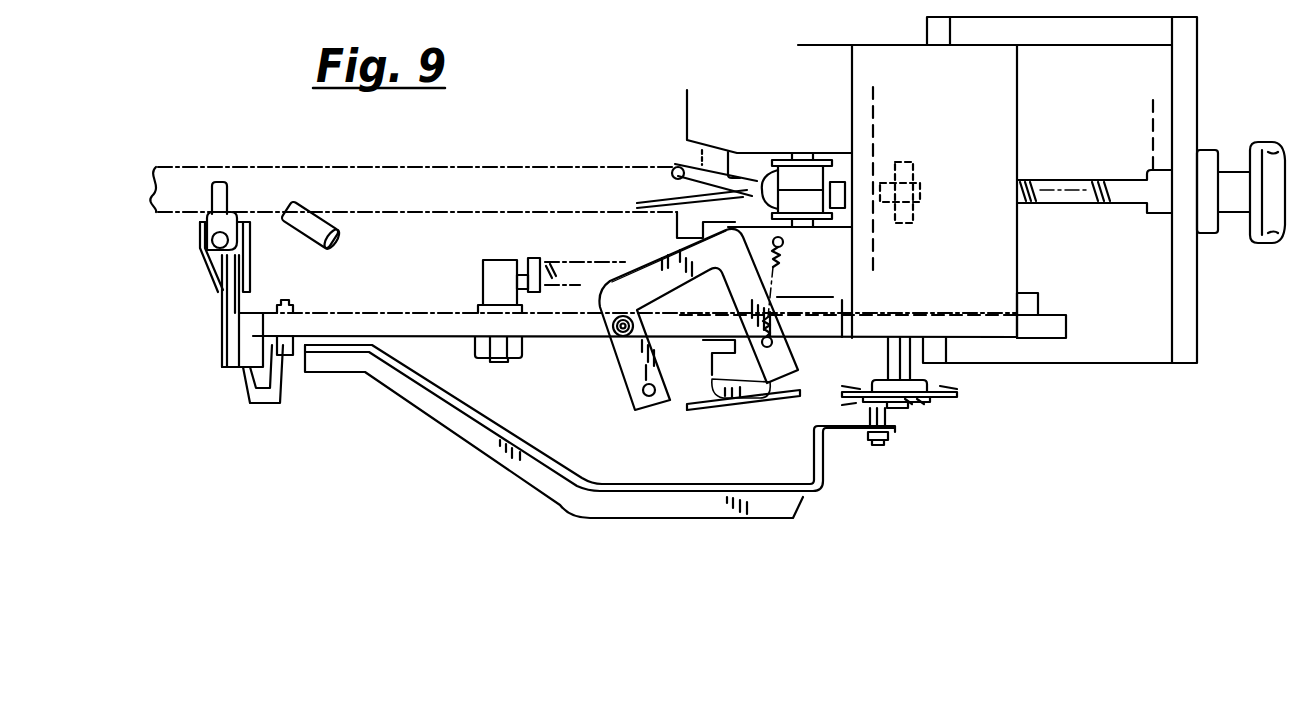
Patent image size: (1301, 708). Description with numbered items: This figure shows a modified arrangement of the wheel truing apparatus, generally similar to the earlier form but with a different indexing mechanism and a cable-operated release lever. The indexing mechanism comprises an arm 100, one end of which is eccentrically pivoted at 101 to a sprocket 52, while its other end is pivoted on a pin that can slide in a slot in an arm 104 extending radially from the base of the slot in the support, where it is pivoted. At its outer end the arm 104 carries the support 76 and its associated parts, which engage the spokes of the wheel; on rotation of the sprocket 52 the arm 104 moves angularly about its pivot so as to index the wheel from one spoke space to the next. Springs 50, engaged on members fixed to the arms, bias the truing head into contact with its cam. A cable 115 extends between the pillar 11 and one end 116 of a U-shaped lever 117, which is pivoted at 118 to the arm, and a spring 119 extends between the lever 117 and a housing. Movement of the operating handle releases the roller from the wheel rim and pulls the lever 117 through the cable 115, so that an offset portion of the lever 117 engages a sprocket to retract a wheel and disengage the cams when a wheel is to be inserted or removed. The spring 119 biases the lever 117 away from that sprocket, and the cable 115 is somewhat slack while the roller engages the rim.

The pillar 11 is at (767, 190).
The springs 50 is at (580, 272).
The sprocket 52 is at (953, 397).
The support 76 is at (217, 258).
The arm 100 is at (597, 498).
The pivot 101 is at (882, 447).
The arm 104 is at (257, 403).
The cable 115 is at (563, 377).
The end of U-shaped lever 116 is at (668, 402).
The U-shaped lever 117 is at (645, 278).
The pivot 118 is at (614, 334).
The spring 119 is at (781, 256).